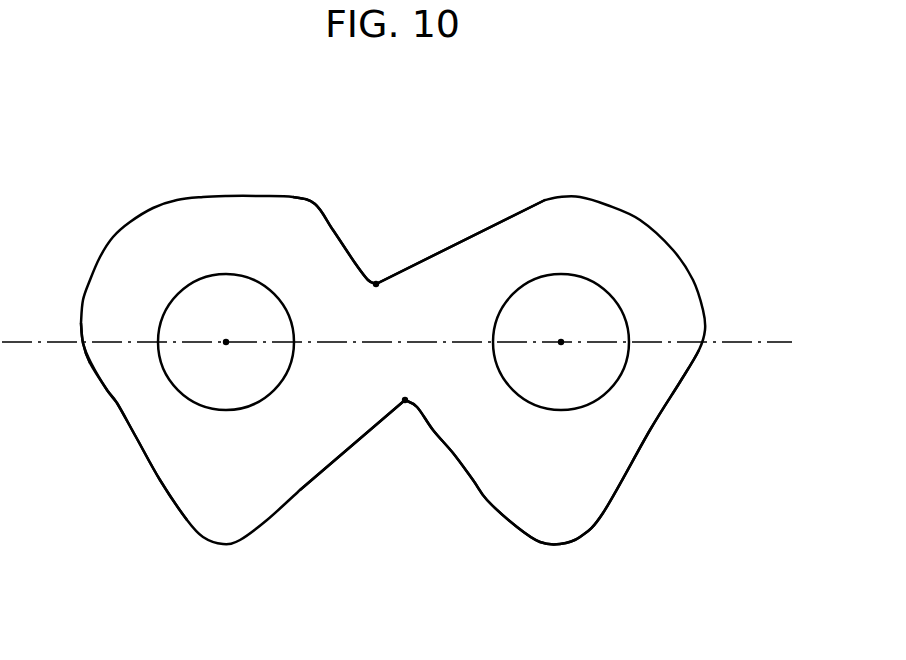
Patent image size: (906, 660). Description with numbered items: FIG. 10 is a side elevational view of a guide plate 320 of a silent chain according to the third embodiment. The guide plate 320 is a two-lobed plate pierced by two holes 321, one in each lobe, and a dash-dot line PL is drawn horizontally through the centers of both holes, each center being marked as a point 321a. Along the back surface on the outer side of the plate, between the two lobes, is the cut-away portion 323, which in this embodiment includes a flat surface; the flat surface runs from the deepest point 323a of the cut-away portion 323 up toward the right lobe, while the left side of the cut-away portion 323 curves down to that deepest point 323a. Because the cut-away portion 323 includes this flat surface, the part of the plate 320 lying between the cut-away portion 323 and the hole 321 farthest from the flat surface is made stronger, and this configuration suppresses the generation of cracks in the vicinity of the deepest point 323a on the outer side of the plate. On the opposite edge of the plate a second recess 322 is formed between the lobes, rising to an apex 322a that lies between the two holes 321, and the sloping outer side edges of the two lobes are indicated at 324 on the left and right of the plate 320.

The guide plate 320 is at (629, 78).
The hole 321 is at (232, 404).
The hole center 321a is at (226, 342).
The lower concave portion 322 is at (397, 506).
The apex of lower concave portion 322a is at (405, 400).
The cut-away portion 323 is at (404, 192).
The deepest point 323a is at (376, 284).
The side edge 324 is at (115, 402).
The center line PL is at (730, 342).